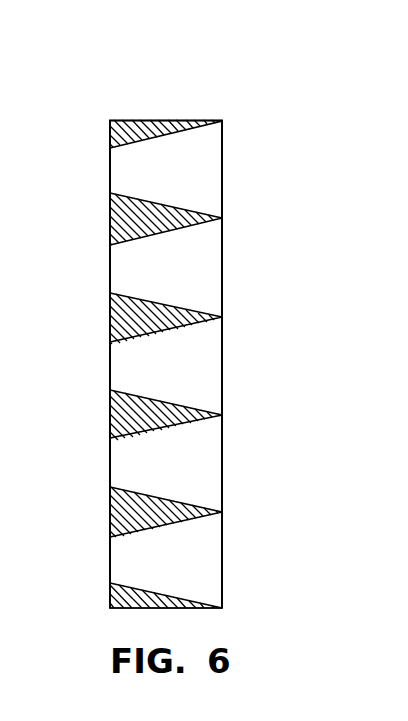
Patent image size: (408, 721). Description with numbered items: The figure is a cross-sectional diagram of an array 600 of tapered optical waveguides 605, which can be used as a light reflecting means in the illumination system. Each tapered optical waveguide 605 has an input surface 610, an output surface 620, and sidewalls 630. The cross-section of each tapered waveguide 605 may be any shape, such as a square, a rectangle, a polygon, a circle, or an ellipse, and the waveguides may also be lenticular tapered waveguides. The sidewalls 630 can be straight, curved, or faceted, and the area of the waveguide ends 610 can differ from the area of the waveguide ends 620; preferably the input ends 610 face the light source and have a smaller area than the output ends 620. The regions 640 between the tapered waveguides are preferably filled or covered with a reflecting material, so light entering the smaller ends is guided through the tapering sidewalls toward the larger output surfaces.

The array of tapered optical waveguides 600 is at (276, 83).
The tapered optical waveguide 605 is at (203, 160).
The input surface 610 is at (110, 364).
The output surface 620 is at (222, 364).
The sidewall 630 is at (168, 300).
The region between tapered waveguides 640 is at (125, 219).